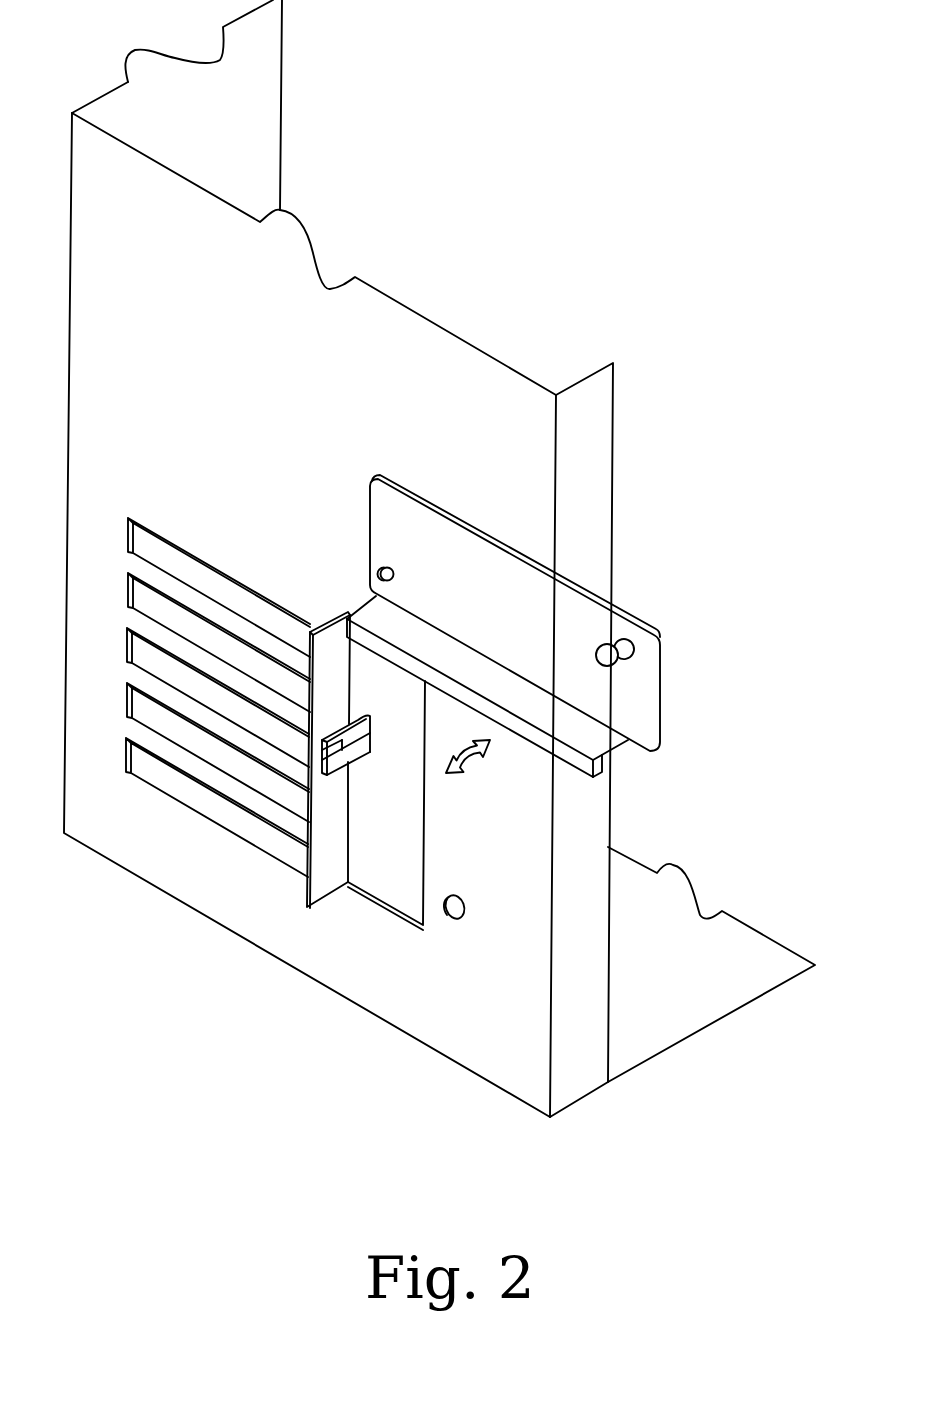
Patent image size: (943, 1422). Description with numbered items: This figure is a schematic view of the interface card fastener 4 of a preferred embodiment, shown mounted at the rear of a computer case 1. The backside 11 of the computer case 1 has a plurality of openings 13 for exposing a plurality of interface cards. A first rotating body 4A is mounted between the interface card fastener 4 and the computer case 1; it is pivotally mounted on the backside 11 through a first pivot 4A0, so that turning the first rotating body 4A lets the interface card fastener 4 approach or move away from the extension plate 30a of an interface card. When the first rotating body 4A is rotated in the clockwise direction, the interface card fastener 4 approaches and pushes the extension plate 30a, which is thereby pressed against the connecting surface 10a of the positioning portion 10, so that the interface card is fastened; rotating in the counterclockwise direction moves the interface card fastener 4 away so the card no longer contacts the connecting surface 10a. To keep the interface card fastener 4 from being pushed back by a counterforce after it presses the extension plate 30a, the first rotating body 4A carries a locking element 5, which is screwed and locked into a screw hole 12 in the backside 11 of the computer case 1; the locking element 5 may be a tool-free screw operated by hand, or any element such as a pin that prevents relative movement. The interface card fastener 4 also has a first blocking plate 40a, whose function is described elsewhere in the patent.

The computer case 1 is at (439, 578).
The backside 11 is at (170, 865).
The screw hole 12 is at (453, 922).
The openings 13 is at (122, 518).
The positioning portion 10 is at (450, 853).
The connecting surface 10a is at (490, 905).
The extension plate 30a is at (350, 740).
The interface card fastener 4 is at (512, 653).
The first rotating body 4A is at (479, 609).
The first pivot 4A0 is at (384, 568).
The locking element 5 is at (608, 657).
The first blocking plate 40a is at (577, 763).